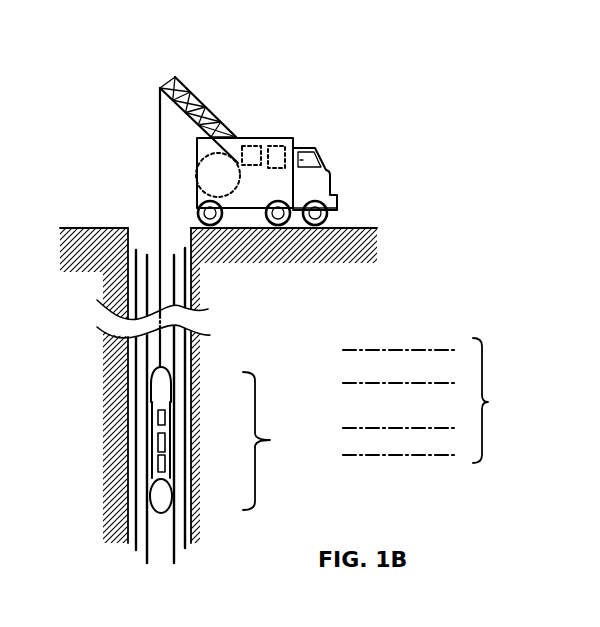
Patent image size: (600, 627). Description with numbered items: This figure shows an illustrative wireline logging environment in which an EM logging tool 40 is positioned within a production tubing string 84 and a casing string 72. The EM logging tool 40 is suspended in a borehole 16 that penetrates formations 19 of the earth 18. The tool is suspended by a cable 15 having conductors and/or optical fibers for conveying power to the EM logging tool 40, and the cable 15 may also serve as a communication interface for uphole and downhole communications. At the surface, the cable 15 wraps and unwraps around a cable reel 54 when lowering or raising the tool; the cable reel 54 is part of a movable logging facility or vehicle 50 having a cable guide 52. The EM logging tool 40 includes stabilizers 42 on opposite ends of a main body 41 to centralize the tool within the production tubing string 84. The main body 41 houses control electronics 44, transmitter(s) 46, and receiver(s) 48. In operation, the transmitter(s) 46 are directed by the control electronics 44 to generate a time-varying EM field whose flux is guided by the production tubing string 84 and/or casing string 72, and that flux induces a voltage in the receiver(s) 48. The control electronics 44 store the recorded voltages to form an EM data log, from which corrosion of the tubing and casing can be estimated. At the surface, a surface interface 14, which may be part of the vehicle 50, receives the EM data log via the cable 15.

The surface interface 14 is at (250, 150).
The cable 15 is at (158, 182).
The borehole 16 is at (137, 231).
The earth 18 is at (115, 262).
The formations 19 is at (436, 400).
The EM logging tool 40 is at (275, 441).
The main body 41 is at (157, 440).
The stabilizers 42 is at (155, 385).
The control electronics 44 is at (166, 418).
The transmitter(s) 46 is at (166, 443).
The receiver(s) 48 is at (166, 463).
The movable logging facility or vehicle 50 is at (332, 184).
The cable guide 52 is at (190, 92).
The cable reel 54 is at (207, 183).
The casing string 72 is at (135, 547).
The production tubing string 84 is at (147, 553).